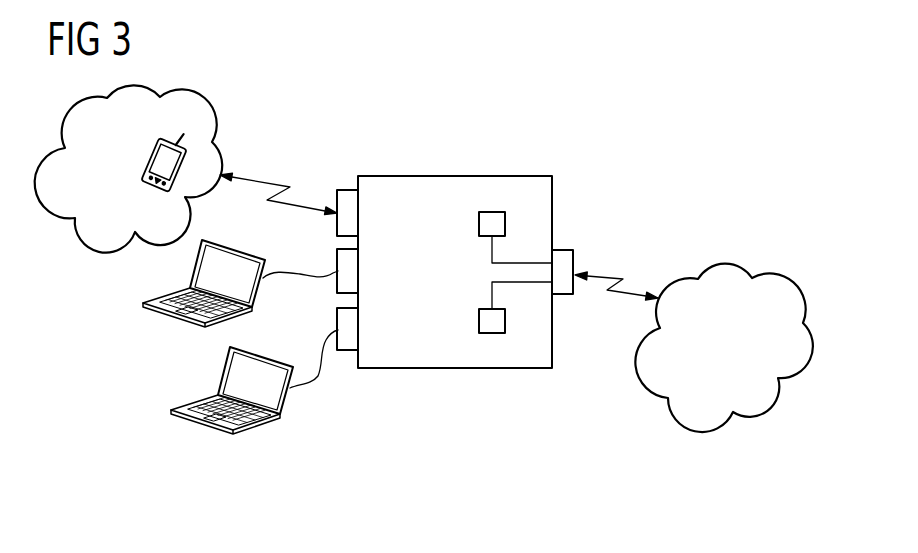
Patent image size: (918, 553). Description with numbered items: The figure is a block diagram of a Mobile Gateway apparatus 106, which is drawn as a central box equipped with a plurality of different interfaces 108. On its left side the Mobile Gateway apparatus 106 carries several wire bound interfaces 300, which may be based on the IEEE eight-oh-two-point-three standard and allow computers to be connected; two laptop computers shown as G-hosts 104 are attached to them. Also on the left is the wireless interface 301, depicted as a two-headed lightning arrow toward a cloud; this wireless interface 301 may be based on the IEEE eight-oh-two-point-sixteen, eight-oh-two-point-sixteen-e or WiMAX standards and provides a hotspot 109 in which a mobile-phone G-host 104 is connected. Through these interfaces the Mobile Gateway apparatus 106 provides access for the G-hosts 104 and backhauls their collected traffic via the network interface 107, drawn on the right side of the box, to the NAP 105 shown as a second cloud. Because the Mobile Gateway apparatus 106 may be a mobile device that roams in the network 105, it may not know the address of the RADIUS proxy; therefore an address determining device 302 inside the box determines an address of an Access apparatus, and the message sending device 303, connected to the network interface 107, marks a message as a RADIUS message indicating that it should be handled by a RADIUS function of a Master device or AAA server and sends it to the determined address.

The G-host 104 is at (148, 163).
The NAP 105 is at (725, 265).
The Mobile Gateway apparatus 106 is at (455, 175).
The network interface 107 is at (605, 273).
The plurality of different interfaces 108 is at (345, 119).
The hotspot 109 is at (103, 256).
The wire bound interfaces 300 is at (283, 278).
The wireless interface 301 is at (260, 178).
The address determining device 302 is at (479, 225).
The message sending device 303 is at (479, 325).